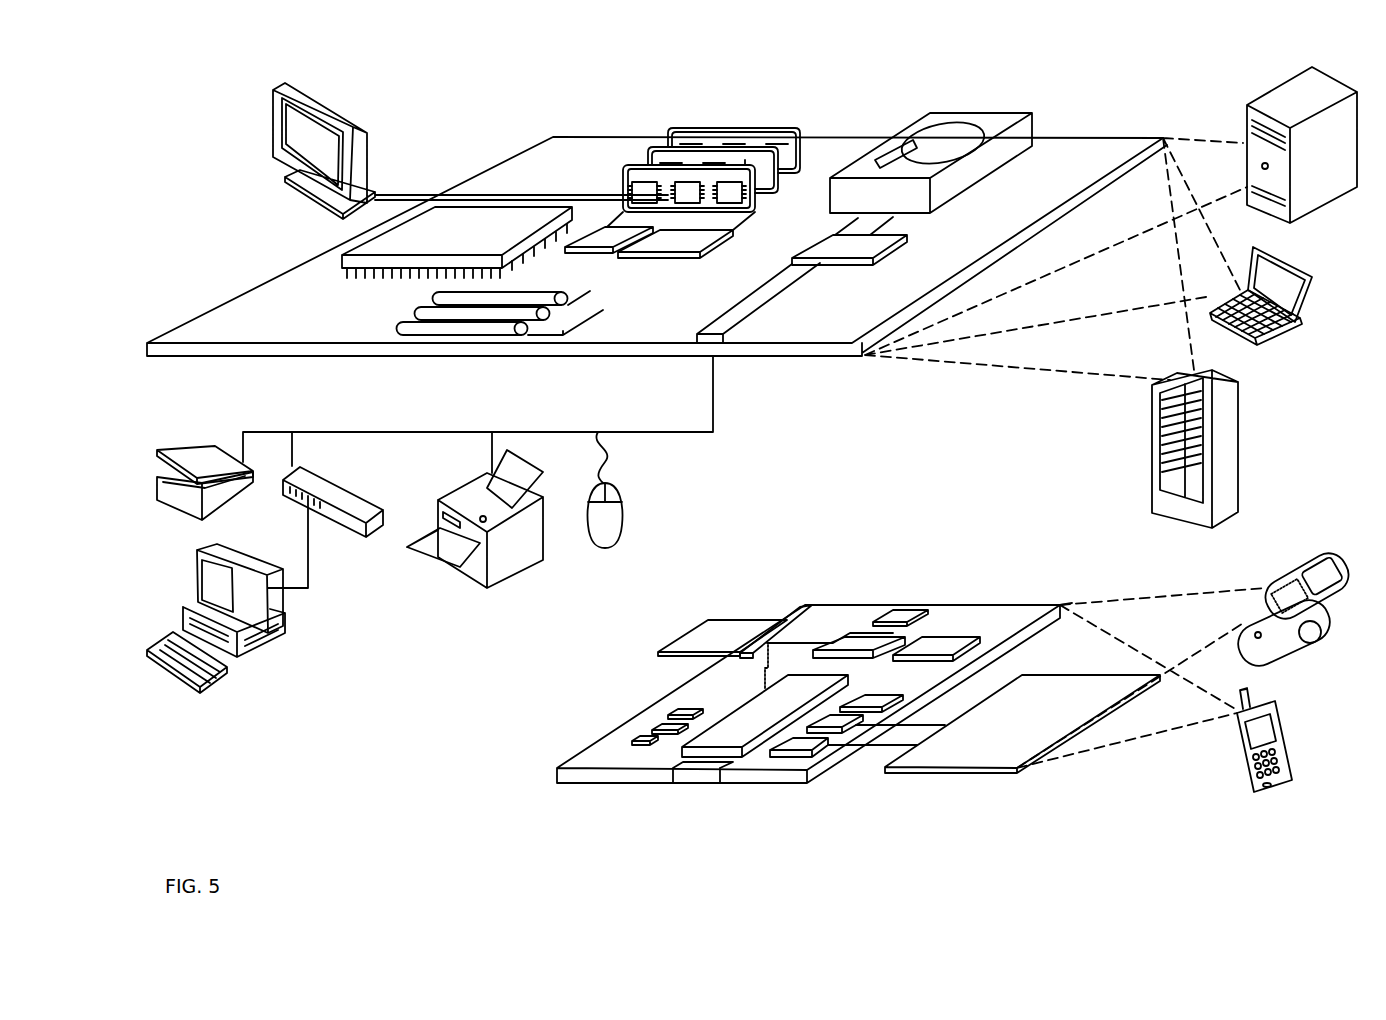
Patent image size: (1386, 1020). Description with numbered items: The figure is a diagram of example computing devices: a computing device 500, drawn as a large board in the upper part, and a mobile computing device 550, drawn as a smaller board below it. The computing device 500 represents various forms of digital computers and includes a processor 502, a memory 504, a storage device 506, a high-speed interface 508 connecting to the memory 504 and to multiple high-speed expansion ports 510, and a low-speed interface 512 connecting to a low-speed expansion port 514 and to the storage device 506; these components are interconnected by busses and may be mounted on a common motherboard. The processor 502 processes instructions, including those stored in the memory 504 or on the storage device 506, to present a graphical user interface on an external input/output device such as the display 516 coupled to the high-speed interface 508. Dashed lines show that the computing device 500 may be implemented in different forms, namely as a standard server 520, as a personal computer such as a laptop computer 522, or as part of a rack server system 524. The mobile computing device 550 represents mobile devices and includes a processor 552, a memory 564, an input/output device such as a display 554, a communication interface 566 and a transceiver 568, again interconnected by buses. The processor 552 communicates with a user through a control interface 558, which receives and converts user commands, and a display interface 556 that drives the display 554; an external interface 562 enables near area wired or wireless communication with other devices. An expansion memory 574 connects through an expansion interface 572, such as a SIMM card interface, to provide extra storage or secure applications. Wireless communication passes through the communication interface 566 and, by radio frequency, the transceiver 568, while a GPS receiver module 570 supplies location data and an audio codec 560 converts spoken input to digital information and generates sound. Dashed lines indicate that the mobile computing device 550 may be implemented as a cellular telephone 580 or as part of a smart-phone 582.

The computing device 500 is at (476, 108).
The processor 502 is at (340, 254).
The memory 504 is at (680, 130).
The storage device 506 is at (914, 126).
The high-speed interface 508 is at (604, 223).
The high-speed expansion ports 510 is at (400, 318).
The low-speed interface 512 is at (827, 243).
The low-speed expansion port 514 is at (724, 346).
The display 516 is at (282, 90).
The standard server 520 is at (1246, 119).
The laptop computer 522 is at (1260, 325).
The rack server system 524 is at (1152, 476).
The mobile computing device 550 is at (524, 783).
The processor 552 is at (737, 740).
The display 554 is at (985, 758).
The display interface 556 is at (808, 752).
The control interface 558 is at (850, 730).
The audio codec 560 is at (868, 706).
The external interface 562 is at (702, 770).
The memory 564 is at (647, 733).
The communication interface 566 is at (858, 642).
The transceiver 568 is at (938, 646).
The GPS receiver module 570 is at (910, 608).
The expansion interface 572 is at (788, 620).
The expansion memory 574 is at (712, 620).
The cellular telephone 580 is at (1293, 562).
The smart-phone 582 is at (1237, 744).